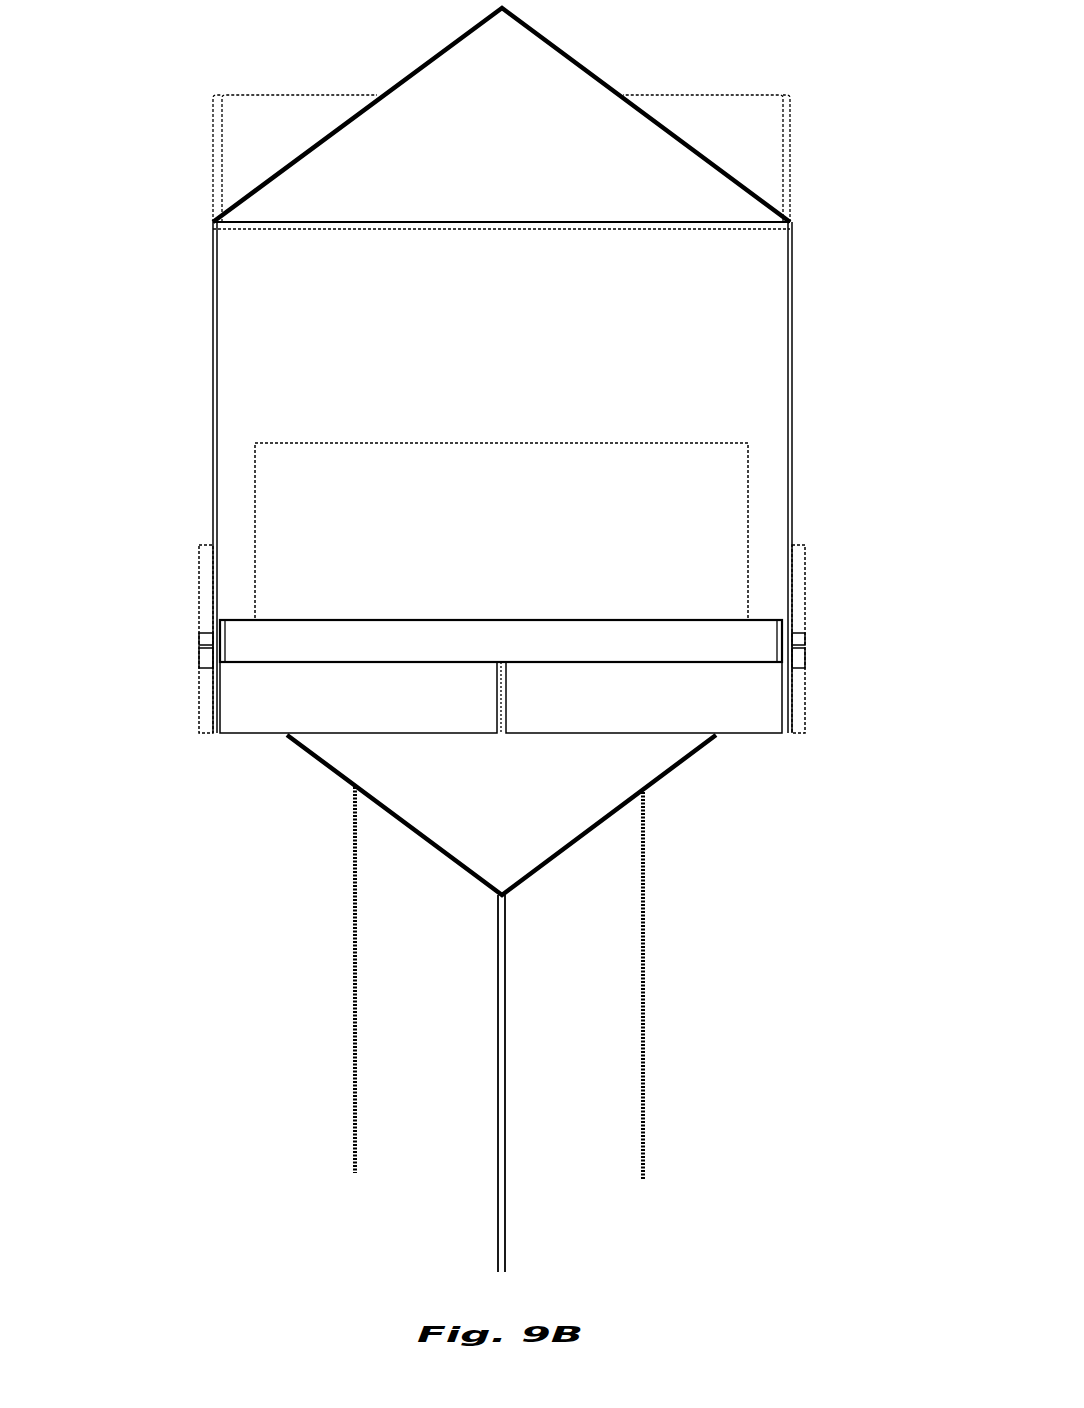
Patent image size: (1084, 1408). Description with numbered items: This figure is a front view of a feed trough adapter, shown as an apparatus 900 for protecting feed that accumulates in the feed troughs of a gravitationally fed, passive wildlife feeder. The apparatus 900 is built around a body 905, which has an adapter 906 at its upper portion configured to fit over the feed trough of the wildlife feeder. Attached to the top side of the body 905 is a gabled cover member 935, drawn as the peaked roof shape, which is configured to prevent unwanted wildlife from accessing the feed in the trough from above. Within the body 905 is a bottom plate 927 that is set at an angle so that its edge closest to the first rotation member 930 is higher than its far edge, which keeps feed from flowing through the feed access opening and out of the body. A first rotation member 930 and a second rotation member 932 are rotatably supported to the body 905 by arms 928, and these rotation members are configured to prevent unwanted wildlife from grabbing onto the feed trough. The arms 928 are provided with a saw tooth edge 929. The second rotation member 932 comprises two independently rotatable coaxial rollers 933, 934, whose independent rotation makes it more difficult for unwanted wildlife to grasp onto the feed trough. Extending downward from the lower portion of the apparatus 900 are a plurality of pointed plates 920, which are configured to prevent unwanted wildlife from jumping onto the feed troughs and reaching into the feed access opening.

The apparatus 900 is at (183, 75).
The body 905 is at (790, 375).
The adapter 906 is at (292, 138).
The gabled cover member 935 is at (512, 161).
The bottom plate 927 is at (535, 618).
The arms 928 is at (205, 572).
The saw tooth edge 929 is at (205, 645).
The first rotation member 930 is at (522, 651).
The second rotation member 932 is at (262, 738).
The independently rotatable coaxial roller 933 is at (369, 710).
The independently rotatable coaxial roller 934 is at (671, 710).
The pointed plates 920 is at (353, 1145).